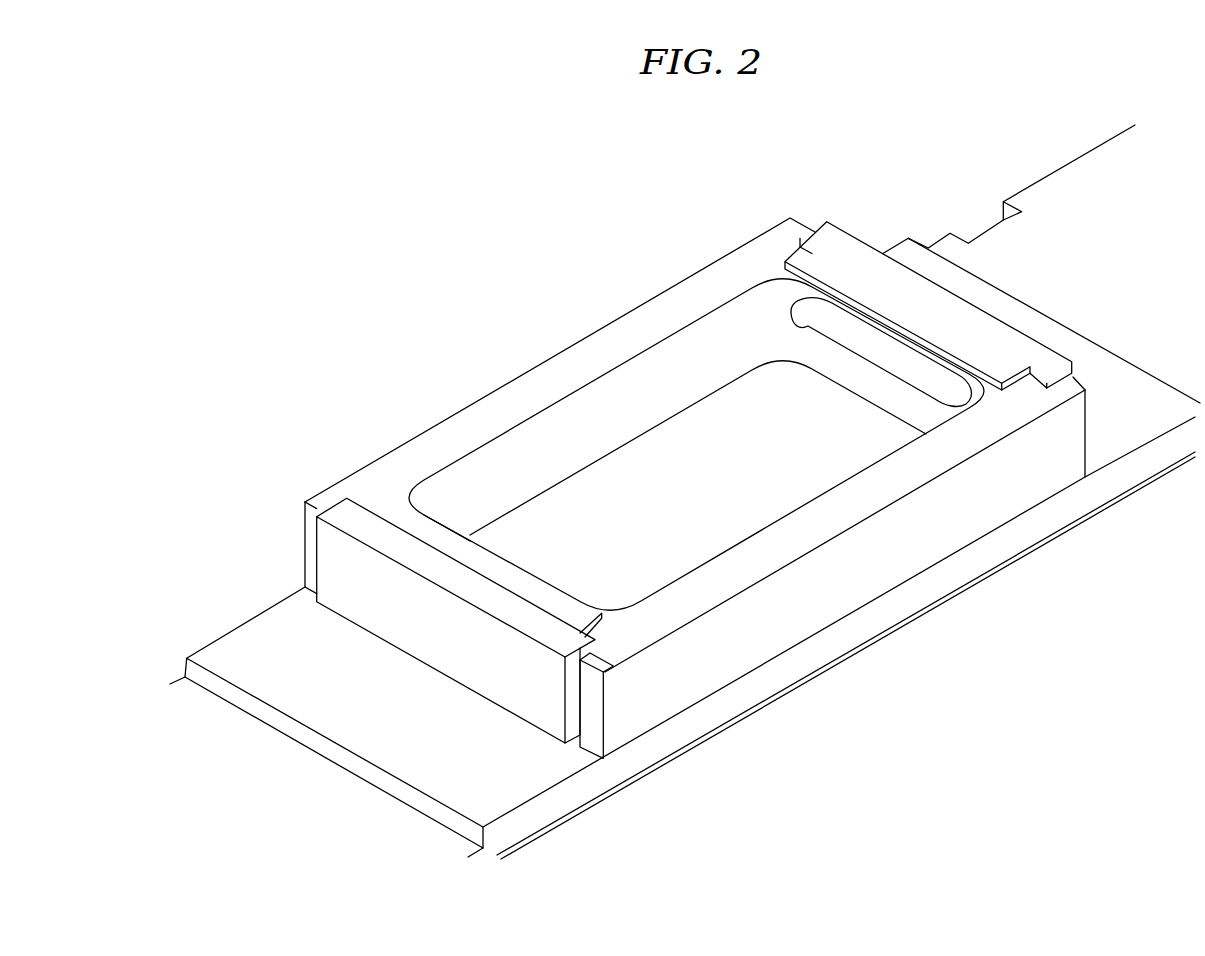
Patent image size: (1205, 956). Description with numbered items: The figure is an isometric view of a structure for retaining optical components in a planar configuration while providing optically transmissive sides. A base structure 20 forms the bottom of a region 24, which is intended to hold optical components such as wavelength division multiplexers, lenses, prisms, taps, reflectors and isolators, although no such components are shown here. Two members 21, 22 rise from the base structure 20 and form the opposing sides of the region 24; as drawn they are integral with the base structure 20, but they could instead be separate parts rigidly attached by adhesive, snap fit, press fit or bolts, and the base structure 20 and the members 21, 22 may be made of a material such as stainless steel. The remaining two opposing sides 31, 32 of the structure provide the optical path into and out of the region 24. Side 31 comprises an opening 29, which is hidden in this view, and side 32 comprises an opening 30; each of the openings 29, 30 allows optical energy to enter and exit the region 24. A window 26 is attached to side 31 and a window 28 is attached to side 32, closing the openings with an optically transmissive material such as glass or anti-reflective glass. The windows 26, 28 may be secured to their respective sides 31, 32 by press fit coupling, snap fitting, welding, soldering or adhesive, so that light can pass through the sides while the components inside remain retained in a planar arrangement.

The base structure 20 is at (248, 638).
The member 21 is at (532, 386).
The member 22 is at (815, 535).
The region 24 is at (657, 548).
The window 26 is at (540, 697).
The window 28 is at (866, 258).
The opening 29 is at (528, 564).
The opening 30 is at (897, 345).
The side 31 is at (283, 536).
The side 32 is at (840, 196).